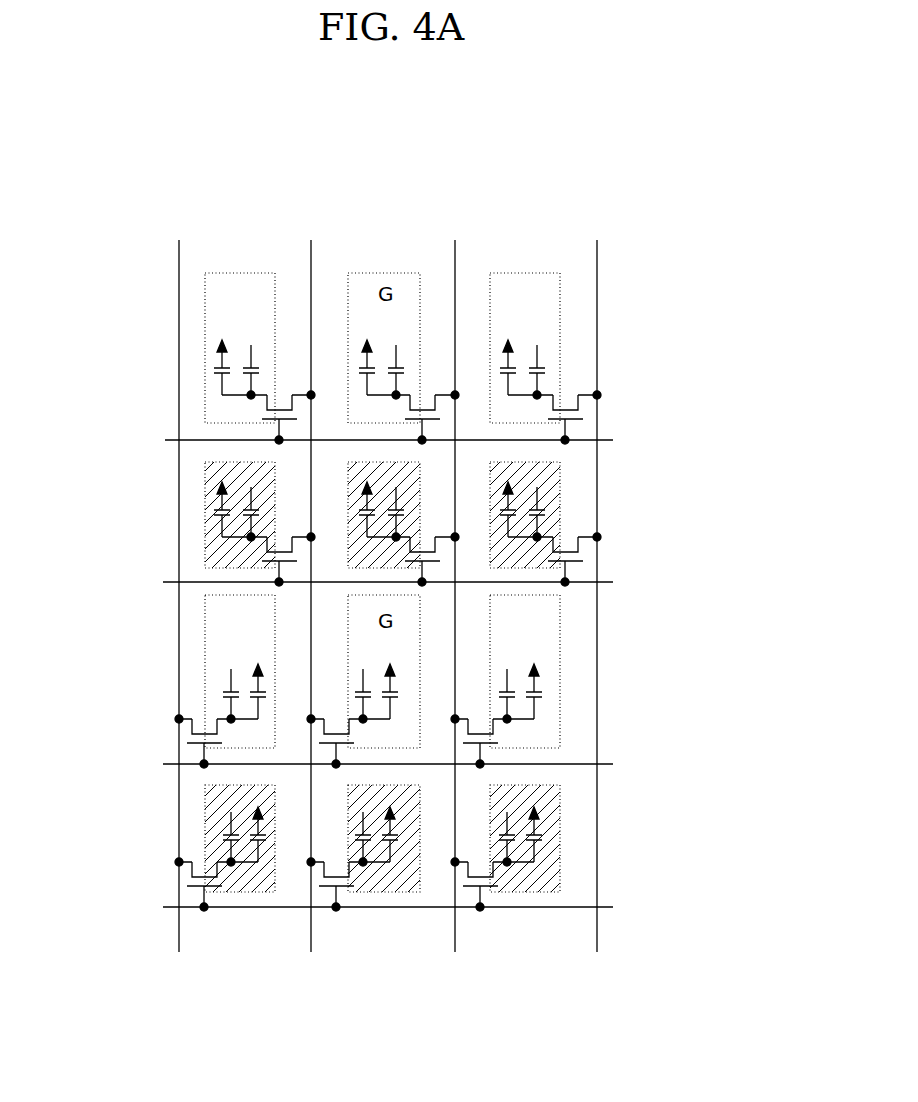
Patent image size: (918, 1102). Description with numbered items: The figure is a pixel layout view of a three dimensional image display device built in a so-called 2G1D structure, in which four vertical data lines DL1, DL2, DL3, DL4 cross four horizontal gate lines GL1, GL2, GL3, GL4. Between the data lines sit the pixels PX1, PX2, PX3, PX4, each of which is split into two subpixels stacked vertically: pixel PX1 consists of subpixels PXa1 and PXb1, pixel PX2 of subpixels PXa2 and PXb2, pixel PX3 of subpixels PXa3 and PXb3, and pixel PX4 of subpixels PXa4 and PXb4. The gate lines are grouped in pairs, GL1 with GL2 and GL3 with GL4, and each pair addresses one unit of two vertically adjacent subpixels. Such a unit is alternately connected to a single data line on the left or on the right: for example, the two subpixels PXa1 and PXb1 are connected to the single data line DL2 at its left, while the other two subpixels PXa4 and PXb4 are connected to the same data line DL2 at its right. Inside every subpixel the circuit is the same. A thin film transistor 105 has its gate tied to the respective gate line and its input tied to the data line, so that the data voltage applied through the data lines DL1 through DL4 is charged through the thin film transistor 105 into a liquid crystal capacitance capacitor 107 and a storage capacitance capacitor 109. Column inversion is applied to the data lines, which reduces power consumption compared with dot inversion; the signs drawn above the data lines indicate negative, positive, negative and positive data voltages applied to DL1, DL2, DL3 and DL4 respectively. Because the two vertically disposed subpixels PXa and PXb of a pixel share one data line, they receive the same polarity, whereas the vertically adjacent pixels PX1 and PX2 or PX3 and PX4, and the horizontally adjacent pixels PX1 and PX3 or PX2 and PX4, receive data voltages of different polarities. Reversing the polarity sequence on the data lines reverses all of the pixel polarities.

The thin film transistor 105 is at (566, 420).
The liquid crystal capacitance capacitor 107 is at (539, 385).
The storage capacitance capacitor 109 is at (513, 368).
The data line DL1 is at (179, 255).
The data line DL2 is at (311, 255).
The data line DL3 is at (455, 255).
The data line DL4 is at (597, 255).
The gate line GL1 is at (165, 440).
The gate line GL2 is at (165, 582).
The gate line GL3 is at (165, 764).
The gate line GL4 is at (165, 907).
The pixel PX1 is at (179, 429).
The pixel PX2 is at (159, 753).
The pixel PX3 is at (592, 429).
The pixel PX4 is at (583, 753).
The subpixel PXa1 is at (205, 395).
The subpixel PXb1 is at (207, 524).
The subpixel PXa2 is at (205, 688).
The subpixel PXb2 is at (187, 848).
The subpixel PXa3 is at (564, 358).
The subpixel PXb3 is at (420, 486).
The subpixel PXa4 is at (420, 640).
The subpixel PXb4 is at (415, 800).